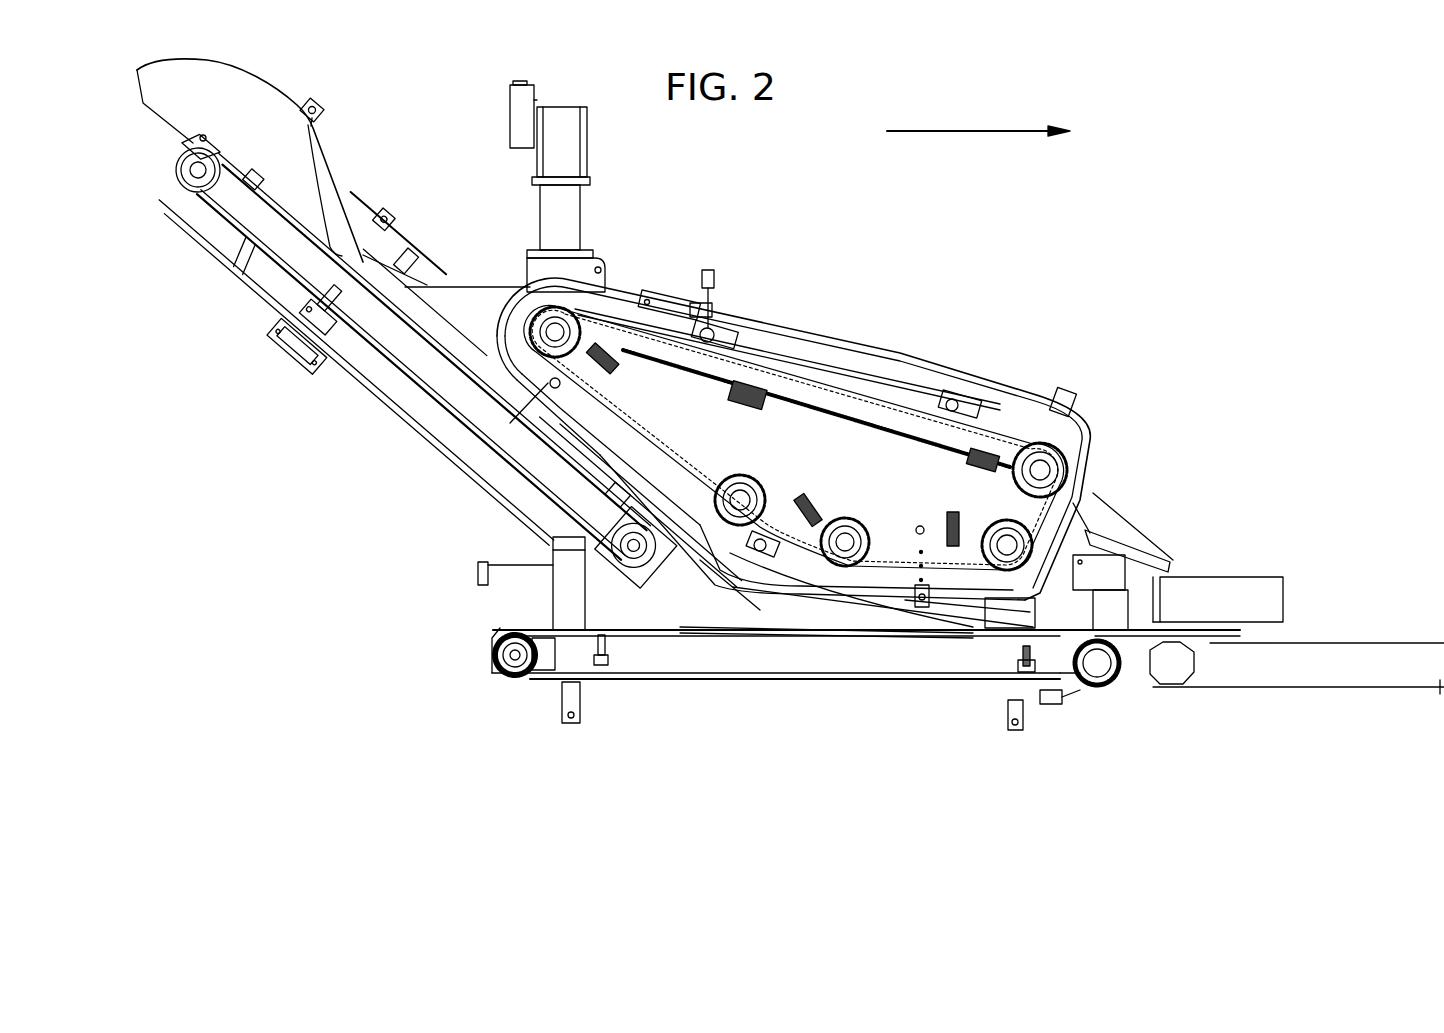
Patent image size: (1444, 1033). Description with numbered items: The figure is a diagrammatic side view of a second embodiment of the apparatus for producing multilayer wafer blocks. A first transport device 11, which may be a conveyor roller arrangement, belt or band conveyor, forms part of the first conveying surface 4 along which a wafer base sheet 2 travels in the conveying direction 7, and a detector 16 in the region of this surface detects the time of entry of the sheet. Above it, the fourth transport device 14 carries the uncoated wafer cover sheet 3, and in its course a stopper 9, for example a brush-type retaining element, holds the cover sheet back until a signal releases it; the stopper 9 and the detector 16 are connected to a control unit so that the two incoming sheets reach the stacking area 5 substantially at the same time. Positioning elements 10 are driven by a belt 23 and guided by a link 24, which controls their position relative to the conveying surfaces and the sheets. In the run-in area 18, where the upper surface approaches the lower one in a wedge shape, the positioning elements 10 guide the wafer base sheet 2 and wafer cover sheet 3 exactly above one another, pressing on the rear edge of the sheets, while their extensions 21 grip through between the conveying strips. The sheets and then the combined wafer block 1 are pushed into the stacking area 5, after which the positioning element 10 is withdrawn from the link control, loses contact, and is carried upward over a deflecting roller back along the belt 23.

The wafer block 1 is at (1222, 635).
The wafer base sheet 2 is at (496, 632).
The wafer cover sheet 3 is at (722, 560).
The first conveying surface 4 is at (641, 499).
The stacking area 5 is at (1015, 630).
The conveying direction 7 is at (975, 131).
The stopper 9 is at (326, 307).
The positioning element 10 is at (720, 320).
The first transport device 11 is at (510, 670).
The fourth transport device 14 is at (297, 346).
The detector 16 is at (478, 570).
The run-in area 18 is at (920, 608).
The extension 21 is at (733, 545).
The belt 23 is at (795, 362).
The link 24 is at (617, 297).